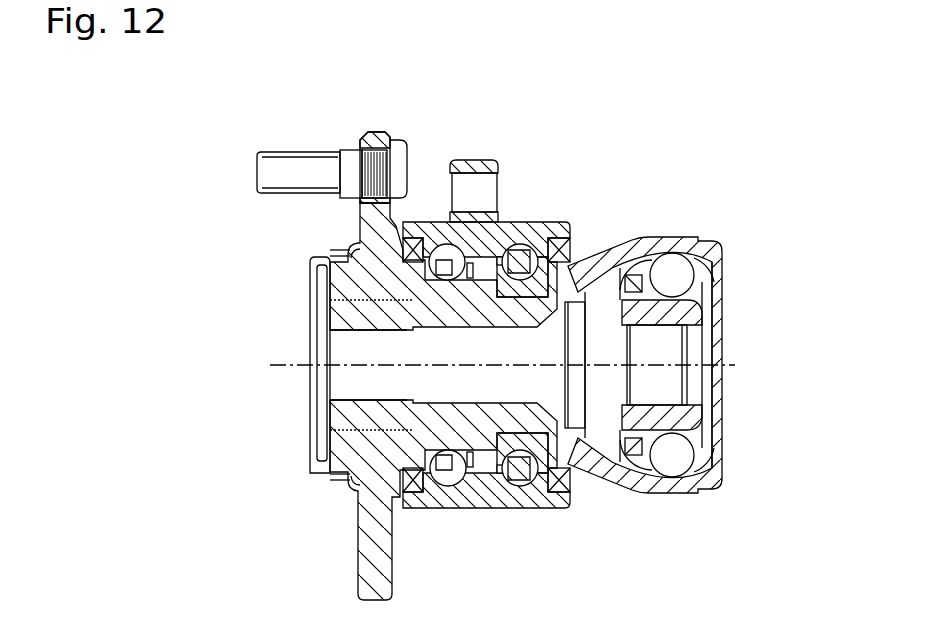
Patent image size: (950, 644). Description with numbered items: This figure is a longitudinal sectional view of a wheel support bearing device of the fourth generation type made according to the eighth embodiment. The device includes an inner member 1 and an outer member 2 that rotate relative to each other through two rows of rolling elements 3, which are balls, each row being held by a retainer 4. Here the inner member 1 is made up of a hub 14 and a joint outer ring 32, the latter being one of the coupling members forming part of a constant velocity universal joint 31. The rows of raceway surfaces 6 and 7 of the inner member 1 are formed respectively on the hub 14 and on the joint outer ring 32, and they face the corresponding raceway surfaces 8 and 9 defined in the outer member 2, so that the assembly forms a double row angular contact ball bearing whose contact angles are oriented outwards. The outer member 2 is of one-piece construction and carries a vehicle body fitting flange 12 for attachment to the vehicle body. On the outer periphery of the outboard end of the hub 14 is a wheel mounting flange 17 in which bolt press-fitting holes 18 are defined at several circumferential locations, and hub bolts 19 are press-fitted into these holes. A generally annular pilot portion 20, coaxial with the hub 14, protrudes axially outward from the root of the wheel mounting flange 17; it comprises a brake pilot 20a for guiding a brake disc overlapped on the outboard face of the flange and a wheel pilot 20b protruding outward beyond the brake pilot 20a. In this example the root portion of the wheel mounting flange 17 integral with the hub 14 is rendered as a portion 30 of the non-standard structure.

The inner member 1 is at (361, 401).
The outer member 2 is at (540, 213).
The rolling elements 3 is at (447, 256).
The retainer 4 is at (498, 452).
The raceway surface 6 is at (443, 452).
The raceway surface 7 is at (530, 487).
The raceway surface 8 is at (468, 467).
The raceway surface 9 is at (515, 482).
The vehicle body fitting flange 12 is at (474, 161).
The hub 14 is at (350, 293).
The wheel mounting flange 17 is at (374, 134).
The bolt press-fitting holes 18 is at (385, 163).
The hub bolts 19 is at (303, 158).
The pilot portion 20 is at (237, 352).
The brake pilot 20a is at (360, 253).
The wheel pilot 20b is at (352, 260).
The portion of the non-standard structure 30 is at (355, 255).
The constant velocity universal joint 31 is at (744, 463).
The joint outer ring 32 is at (370, 317).